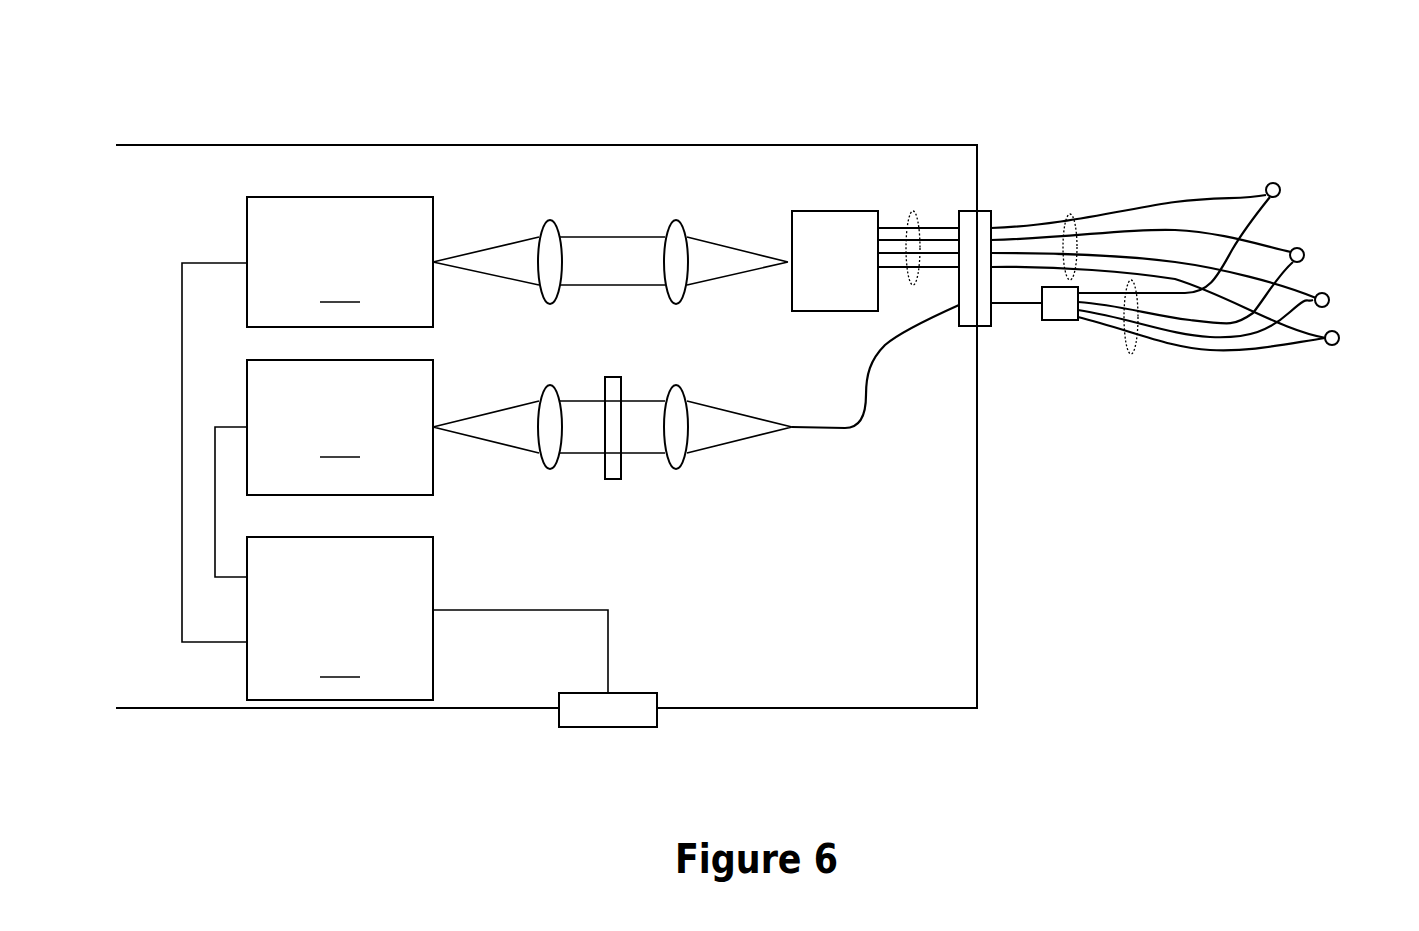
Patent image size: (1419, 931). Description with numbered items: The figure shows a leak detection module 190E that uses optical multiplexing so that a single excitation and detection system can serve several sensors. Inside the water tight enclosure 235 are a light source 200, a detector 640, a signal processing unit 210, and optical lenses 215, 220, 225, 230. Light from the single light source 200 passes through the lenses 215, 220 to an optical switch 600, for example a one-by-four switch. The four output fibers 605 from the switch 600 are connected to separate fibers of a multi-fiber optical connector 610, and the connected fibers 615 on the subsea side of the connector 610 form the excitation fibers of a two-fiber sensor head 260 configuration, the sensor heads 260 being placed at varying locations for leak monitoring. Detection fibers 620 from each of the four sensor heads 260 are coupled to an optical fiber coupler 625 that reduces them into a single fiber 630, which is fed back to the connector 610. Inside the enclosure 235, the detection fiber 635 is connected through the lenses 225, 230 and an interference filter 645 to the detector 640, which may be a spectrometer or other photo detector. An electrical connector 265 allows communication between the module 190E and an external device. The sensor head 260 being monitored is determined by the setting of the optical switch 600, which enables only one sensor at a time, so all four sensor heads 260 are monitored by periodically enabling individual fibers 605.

The leak detection module 190E is at (152, 110).
The water tight enclosure 235 is at (475, 145).
The light source 200 is at (340, 262).
The detector 640 is at (340, 427).
The signal processing unit 210 is at (340, 618).
The optical lens 215 is at (550, 220).
The optical lens 220 is at (678, 220).
The optical lens 225 is at (550, 385).
The interference filter 645 is at (617, 377).
The optical lens 230 is at (678, 385).
The optical switch 600 is at (823, 210).
The output fibers 605 is at (914, 210).
The multi-fiber optical connector 610 is at (982, 209).
The connected fibers 615 is at (1070, 212).
The single fiber 630 is at (1005, 307).
The optical fiber coupler 625 is at (1062, 322).
The detection fibers 620 is at (1130, 357).
The detection fiber 635 is at (875, 362).
The sensor head 260 is at (1279, 185).
The electrical connector 265 is at (640, 692).